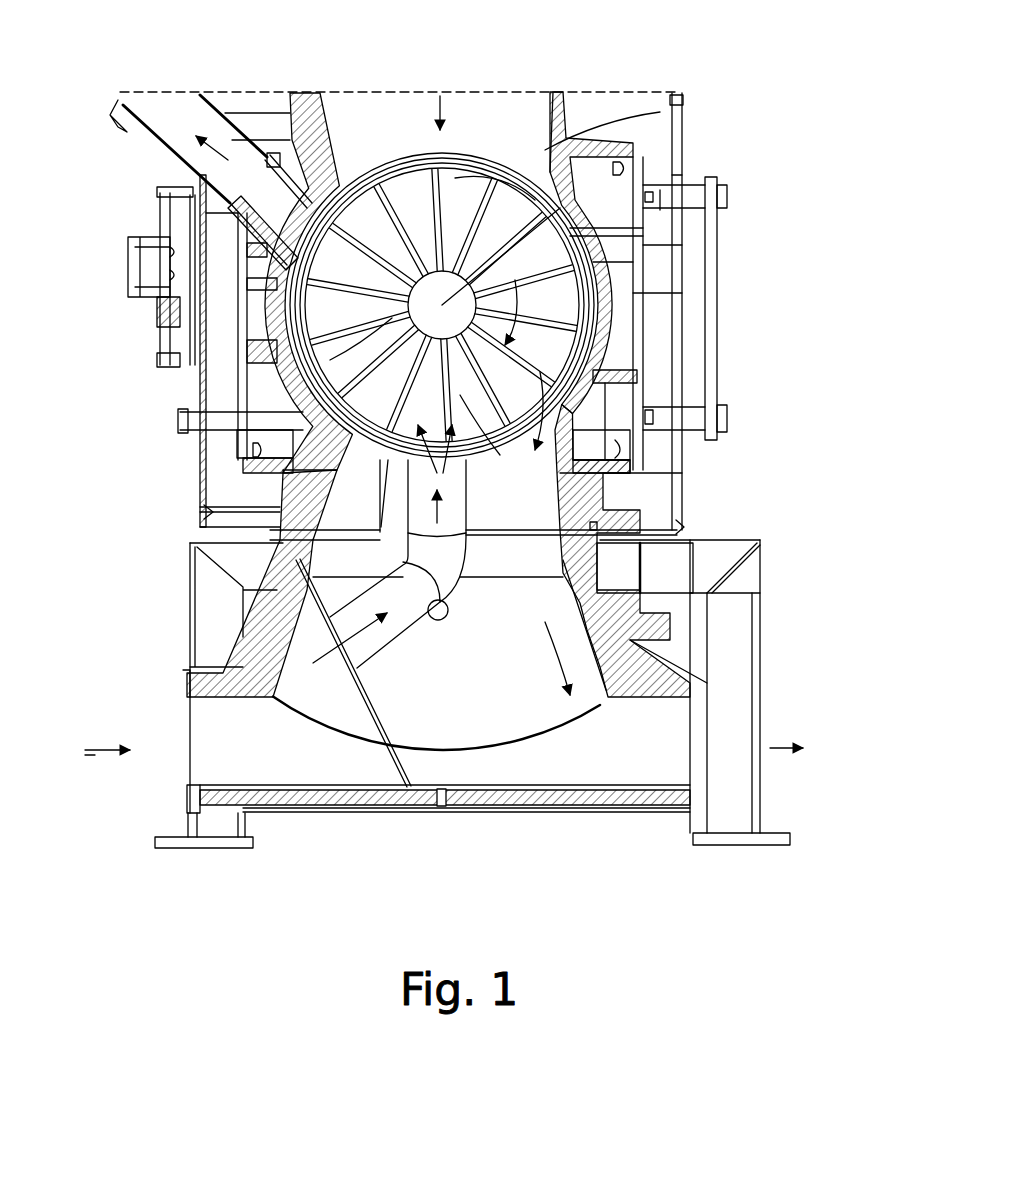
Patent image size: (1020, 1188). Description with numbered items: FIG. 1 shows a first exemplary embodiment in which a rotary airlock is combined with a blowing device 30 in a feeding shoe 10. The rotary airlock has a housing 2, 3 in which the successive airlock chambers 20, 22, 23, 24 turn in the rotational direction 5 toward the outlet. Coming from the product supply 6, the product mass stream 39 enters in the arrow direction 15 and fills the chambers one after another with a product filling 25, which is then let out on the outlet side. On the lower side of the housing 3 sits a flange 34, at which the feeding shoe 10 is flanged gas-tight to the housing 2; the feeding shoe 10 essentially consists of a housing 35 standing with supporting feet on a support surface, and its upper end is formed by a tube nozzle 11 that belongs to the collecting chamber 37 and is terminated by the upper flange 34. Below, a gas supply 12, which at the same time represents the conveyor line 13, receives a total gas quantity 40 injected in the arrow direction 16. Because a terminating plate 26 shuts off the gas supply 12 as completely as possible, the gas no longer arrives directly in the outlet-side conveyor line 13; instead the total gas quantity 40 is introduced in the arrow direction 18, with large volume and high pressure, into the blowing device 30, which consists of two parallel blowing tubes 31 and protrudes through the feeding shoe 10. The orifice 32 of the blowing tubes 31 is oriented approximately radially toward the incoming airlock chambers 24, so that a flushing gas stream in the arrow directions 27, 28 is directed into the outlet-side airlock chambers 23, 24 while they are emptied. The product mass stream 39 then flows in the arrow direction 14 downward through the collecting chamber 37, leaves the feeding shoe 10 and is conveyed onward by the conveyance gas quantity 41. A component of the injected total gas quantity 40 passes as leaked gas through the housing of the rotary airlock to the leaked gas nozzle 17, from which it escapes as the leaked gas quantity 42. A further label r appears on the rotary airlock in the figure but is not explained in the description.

The housing 2 is at (597, 178).
The housing 3 is at (640, 262).
The rotational direction 5 is at (645, 300).
The product supply 6 is at (597, 118).
The feeding shoe 10 is at (805, 440).
The tube nozzle 11 is at (650, 572).
The gas supply 12 is at (262, 768).
The conveyor line 13 is at (620, 765).
The arrow direction 14 is at (545, 700).
The arrow direction 15 is at (440, 94).
The arrow direction 16 is at (100, 745).
The leaked gas nozzle 17 is at (122, 125).
The arrow direction 18 is at (338, 700).
The airlock chamber 20 is at (548, 128).
The airlock chamber 22 is at (718, 215).
The airlock chamber 23 is at (727, 418).
The airlock chamber 24 is at (650, 462).
The product filling 25 is at (747, 285).
The terminating plate 26 is at (420, 715).
The arrow direction 27 is at (278, 468).
The arrow direction 28 is at (478, 478).
The blowing device 30 is at (458, 620).
The blowing tube 31 is at (448, 760).
The orifice 32 is at (272, 503).
The flange 34 is at (600, 525).
The housing 35 is at (250, 650).
The collecting chamber 37 is at (650, 610).
The product mass stream 39 is at (476, 464).
The total gas quantity 40 is at (102, 711).
The conveyance gas quantity 41 is at (795, 745).
The leaked gas quantity 42 is at (182, 163).
The wheel radius r is at (600, 148).